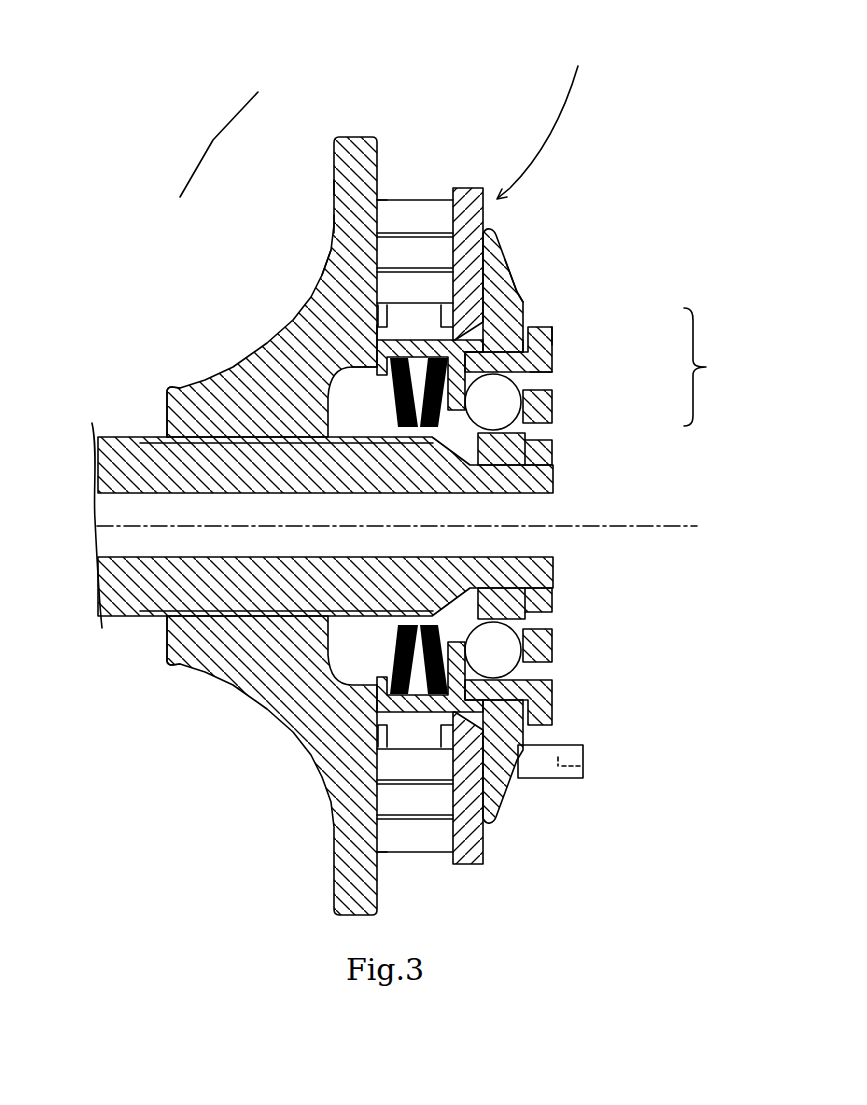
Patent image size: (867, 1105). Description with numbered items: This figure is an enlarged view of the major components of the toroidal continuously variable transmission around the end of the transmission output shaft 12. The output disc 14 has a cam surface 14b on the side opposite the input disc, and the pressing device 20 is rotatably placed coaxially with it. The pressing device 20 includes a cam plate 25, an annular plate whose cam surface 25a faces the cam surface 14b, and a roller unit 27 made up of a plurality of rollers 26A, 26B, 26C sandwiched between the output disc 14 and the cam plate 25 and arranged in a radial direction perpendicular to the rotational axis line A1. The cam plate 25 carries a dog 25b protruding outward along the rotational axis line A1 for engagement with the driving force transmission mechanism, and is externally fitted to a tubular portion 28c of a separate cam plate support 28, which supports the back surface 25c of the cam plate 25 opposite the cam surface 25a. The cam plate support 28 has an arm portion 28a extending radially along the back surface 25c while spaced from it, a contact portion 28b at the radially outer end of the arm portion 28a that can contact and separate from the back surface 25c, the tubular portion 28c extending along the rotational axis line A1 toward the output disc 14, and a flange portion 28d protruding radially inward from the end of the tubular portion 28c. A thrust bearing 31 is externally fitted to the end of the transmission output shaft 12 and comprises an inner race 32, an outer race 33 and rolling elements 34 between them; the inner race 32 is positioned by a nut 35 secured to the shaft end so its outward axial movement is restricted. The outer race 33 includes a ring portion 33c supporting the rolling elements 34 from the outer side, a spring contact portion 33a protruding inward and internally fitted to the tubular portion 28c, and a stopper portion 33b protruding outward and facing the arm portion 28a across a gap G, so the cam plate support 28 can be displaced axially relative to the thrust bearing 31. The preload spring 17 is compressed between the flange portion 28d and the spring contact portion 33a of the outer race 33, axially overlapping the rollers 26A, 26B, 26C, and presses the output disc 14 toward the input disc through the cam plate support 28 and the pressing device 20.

The transmission output shaft 12 is at (115, 463).
The output disc 14 is at (345, 137).
The cam surface 14b is at (388, 197).
The preload spring 17 is at (400, 395).
The pressing device 20 is at (553, 119).
The cam plate 25 is at (472, 188).
The cam surface 25a is at (443, 197).
The dog 25b is at (552, 798).
The back surface 25c is at (492, 228).
The roller 26A is at (329, 257).
The roller 26B is at (333, 228).
The roller 26C is at (334, 188).
The roller unit 27 is at (219, 144).
The cam plate support 28 is at (522, 318).
The arm portion 28a is at (521, 300).
The contact portion 28b is at (512, 280).
The tubular portion 28c is at (377, 325).
The flange portion 28d is at (377, 367).
The thrust bearing 31 is at (713, 367).
The inner race 32 is at (553, 418).
The outer race 33 is at (553, 333).
The spring contact portion 33a is at (546, 372).
The stopper portion 33b is at (553, 343).
The ring portion 33c is at (523, 345).
The rolling elements 34 is at (507, 407).
The nut 35 is at (553, 457).
The rotational axis line A1 is at (660, 527).
The gap G is at (476, 358).